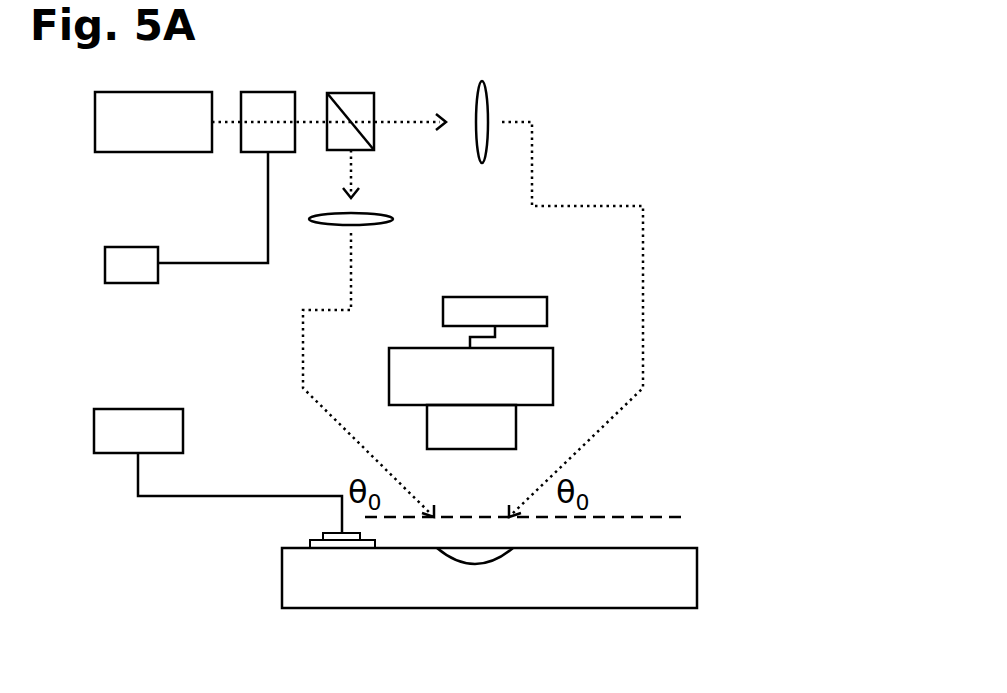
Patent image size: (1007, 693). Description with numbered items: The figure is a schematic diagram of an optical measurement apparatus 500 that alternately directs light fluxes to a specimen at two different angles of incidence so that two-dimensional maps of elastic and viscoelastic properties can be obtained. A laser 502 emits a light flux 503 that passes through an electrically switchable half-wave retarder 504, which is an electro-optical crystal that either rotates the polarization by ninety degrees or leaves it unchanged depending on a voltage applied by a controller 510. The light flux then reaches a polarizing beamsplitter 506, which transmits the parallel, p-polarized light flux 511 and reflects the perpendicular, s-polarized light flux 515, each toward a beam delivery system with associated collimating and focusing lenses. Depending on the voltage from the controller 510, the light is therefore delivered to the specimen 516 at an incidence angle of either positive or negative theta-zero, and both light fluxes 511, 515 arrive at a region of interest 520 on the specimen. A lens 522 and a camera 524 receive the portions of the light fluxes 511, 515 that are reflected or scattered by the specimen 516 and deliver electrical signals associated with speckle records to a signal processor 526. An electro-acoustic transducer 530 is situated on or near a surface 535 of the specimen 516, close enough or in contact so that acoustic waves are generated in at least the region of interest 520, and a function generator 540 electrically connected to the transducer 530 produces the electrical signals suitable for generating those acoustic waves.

The optical measurement apparatus 500 is at (632, 129).
The laser 502 is at (157, 92).
The light flux 503 is at (230, 124).
The electrically switchable half-wave retarder 504 is at (268, 92).
The polarizing beamsplitter 506 is at (352, 93).
The controller 510 is at (131, 247).
The p-polarized light flux 511 is at (583, 205).
The s-polarized light flux 515 is at (324, 310).
The specimen 516 is at (698, 575).
The region of interest 520 is at (474, 548).
The lens 522 is at (470, 449).
The camera 524 is at (428, 348).
The signal processor 526 is at (495, 297).
The electro-acoustic transducer 530 is at (332, 533).
The surface 535 is at (631, 548).
The function generator 540 is at (140, 409).